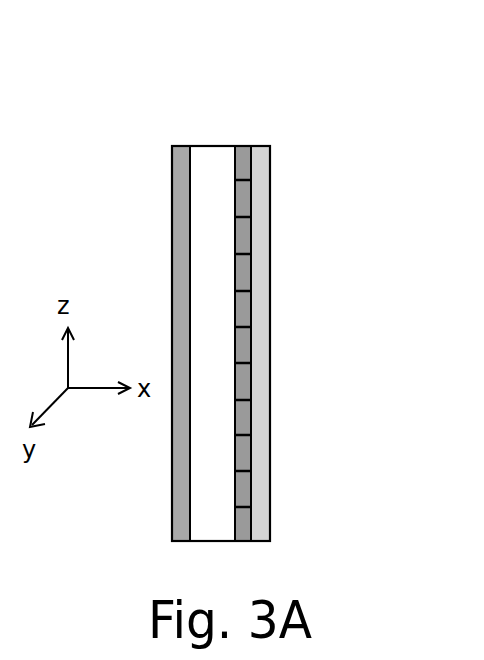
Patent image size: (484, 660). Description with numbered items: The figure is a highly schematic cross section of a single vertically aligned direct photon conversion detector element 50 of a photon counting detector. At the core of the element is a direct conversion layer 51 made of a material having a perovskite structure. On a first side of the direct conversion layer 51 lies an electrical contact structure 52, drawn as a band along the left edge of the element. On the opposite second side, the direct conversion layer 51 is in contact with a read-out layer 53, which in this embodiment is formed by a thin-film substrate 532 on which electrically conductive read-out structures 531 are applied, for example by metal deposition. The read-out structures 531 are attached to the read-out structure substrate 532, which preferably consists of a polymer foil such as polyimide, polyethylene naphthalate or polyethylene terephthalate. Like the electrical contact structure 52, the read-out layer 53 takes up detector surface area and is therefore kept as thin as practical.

The direct photon conversion detector element 50 is at (274, 278).
The direct conversion layer 51 is at (212, 165).
The electrical contact structure 52 is at (180, 165).
The read-out layer 53 is at (317, 278).
The electrically conductive read-out structure 531 is at (245, 165).
The read-out structure substrate 532 is at (263, 160).